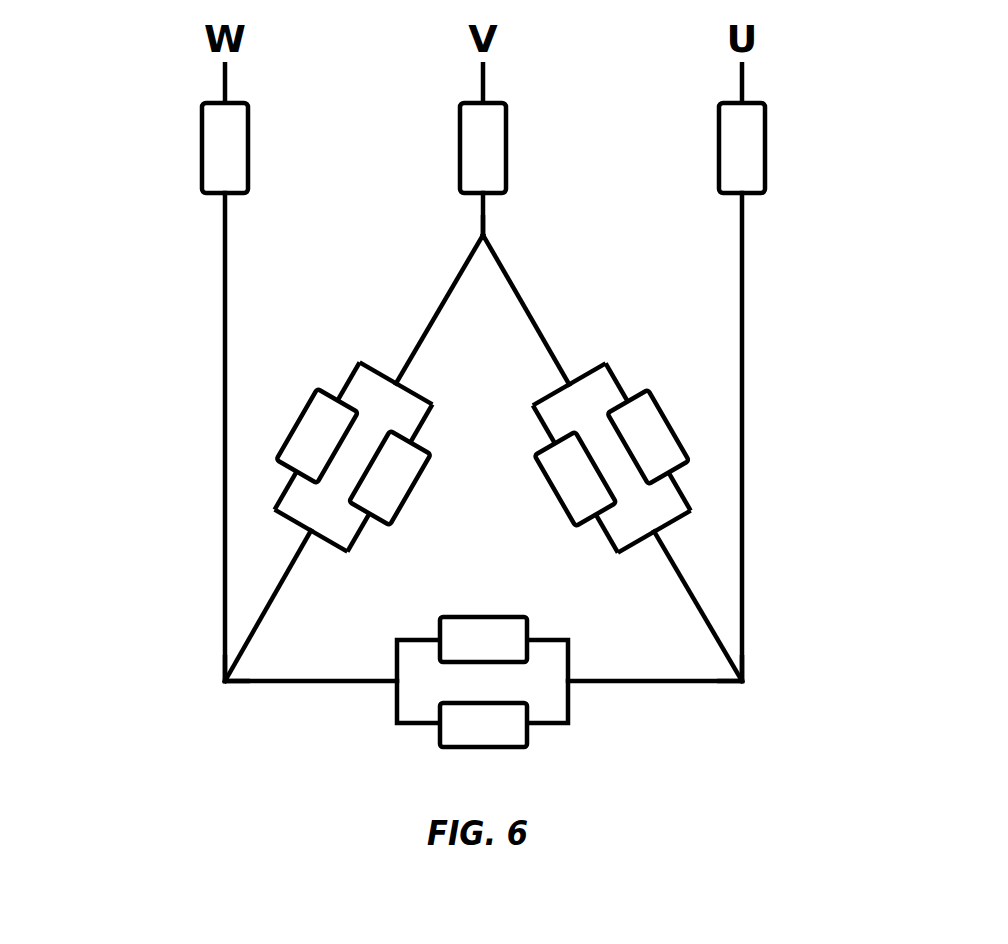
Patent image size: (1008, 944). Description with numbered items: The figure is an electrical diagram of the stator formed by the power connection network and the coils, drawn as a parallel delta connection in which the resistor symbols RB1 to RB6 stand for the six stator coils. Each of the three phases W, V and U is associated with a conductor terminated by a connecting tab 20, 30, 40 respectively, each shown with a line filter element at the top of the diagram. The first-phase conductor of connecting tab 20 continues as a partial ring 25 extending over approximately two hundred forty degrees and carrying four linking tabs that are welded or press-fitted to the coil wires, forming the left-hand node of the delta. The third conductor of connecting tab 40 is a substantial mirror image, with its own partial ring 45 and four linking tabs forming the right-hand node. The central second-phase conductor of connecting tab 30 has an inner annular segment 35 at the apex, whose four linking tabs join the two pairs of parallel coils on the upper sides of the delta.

The connecting tab 20 is at (222, 87).
The connecting tab 30 is at (482, 87).
The connecting tab 40 is at (742, 85).
The partial ring 25 is at (225, 637).
The inner annular segment 35 is at (483, 222).
The partial ring 45 is at (745, 664).